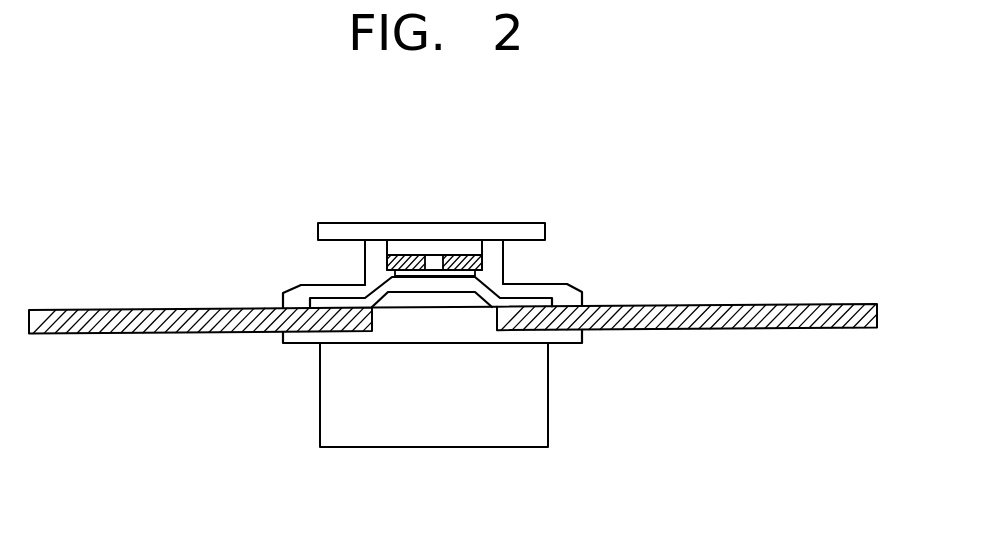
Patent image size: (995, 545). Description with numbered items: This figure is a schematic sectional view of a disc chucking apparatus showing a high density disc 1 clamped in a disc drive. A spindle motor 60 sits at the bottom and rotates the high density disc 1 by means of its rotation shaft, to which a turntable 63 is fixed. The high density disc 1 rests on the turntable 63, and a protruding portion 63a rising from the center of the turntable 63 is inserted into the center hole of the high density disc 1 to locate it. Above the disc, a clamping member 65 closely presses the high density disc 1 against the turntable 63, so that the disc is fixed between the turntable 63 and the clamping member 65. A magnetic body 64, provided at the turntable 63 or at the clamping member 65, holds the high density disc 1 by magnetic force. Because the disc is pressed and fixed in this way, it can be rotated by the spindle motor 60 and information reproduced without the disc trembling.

The high density disc 1 is at (780, 303).
The spindle motor 60 is at (535, 418).
The turntable 63 is at (583, 343).
The protruding portion 63a is at (488, 313).
The magnetic body 64 is at (387, 258).
The clamping member 65 is at (478, 230).